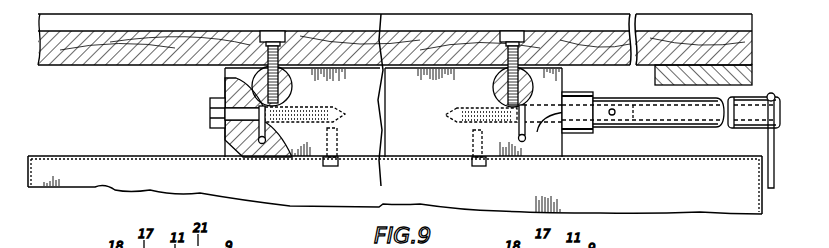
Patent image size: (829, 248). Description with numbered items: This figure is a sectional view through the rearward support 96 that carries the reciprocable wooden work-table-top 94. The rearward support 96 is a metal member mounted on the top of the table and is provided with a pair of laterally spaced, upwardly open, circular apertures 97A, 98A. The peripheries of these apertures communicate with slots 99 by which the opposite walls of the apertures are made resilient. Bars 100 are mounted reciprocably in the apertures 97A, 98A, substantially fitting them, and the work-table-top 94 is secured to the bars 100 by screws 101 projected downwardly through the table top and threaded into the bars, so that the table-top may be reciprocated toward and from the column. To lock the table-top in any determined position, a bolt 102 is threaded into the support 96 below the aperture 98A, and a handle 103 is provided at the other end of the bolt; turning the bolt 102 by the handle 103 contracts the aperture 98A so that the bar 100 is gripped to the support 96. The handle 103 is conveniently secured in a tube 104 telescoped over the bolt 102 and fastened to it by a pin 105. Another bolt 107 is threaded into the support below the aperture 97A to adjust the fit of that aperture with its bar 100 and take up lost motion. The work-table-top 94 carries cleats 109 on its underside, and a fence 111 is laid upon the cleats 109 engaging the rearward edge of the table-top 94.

The work-table-top 94 is at (752, 44).
The fence 111 is at (736, 22).
The cleat 109 is at (752, 77).
The rearward support 96 is at (561, 133).
The bolt 107 is at (211, 114).
The bar 100 is at (292, 86).
The screw 101 is at (279, 28).
The aperture 97A is at (291, 100).
The aperture 98A is at (498, 101).
The slot 99 is at (281, 127).
The bolt 102 is at (546, 130).
The tube 104 is at (710, 128).
The pin 105 is at (613, 109).
The handle 103 is at (769, 143).